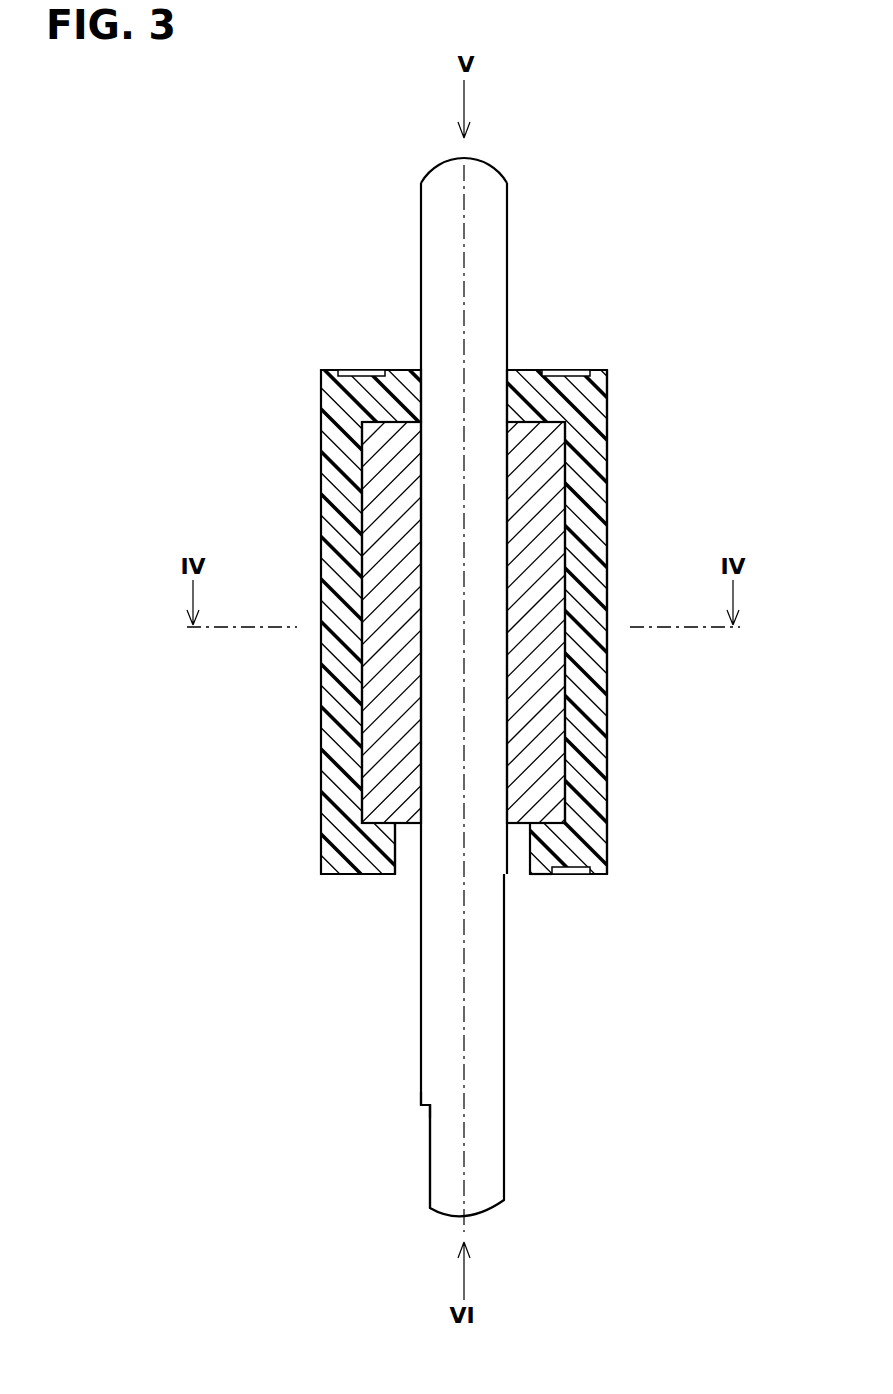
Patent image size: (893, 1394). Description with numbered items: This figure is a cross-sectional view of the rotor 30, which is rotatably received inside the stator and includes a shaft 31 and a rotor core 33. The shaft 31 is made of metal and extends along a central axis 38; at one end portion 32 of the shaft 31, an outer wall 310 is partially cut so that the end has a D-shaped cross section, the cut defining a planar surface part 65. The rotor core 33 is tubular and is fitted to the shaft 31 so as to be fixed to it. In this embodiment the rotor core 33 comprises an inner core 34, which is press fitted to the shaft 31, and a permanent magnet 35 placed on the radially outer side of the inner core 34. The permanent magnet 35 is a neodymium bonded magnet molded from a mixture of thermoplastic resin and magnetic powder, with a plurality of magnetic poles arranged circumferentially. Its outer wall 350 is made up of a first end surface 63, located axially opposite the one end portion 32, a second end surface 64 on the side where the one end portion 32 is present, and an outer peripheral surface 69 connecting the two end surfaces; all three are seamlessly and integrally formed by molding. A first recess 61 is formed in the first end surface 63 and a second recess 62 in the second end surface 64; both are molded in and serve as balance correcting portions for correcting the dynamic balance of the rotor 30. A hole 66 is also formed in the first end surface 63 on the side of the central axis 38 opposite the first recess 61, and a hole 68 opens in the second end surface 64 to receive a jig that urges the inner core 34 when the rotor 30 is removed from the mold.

The rotor 30 is at (446, 622).
The shaft 31 is at (490, 237).
The one end portion 32 is at (493, 1150).
The rotor core 33 is at (446, 622).
The inner core 34 is at (555, 518).
The permanent magnet 35 is at (592, 455).
The central axis 38 is at (464, 205).
The first recess 61 is at (357, 370).
The second recess 62 is at (573, 875).
The first end surface 63 is at (405, 370).
The second end surface 64 is at (540, 876).
The planar surface part 65 is at (430, 1160).
The hole 66 is at (565, 370).
The hole 68 is at (410, 853).
The outer peripheral surface 69 is at (607, 750).
The outer wall 310 is at (419, 1093).
The outer wall 350 is at (527, 370).